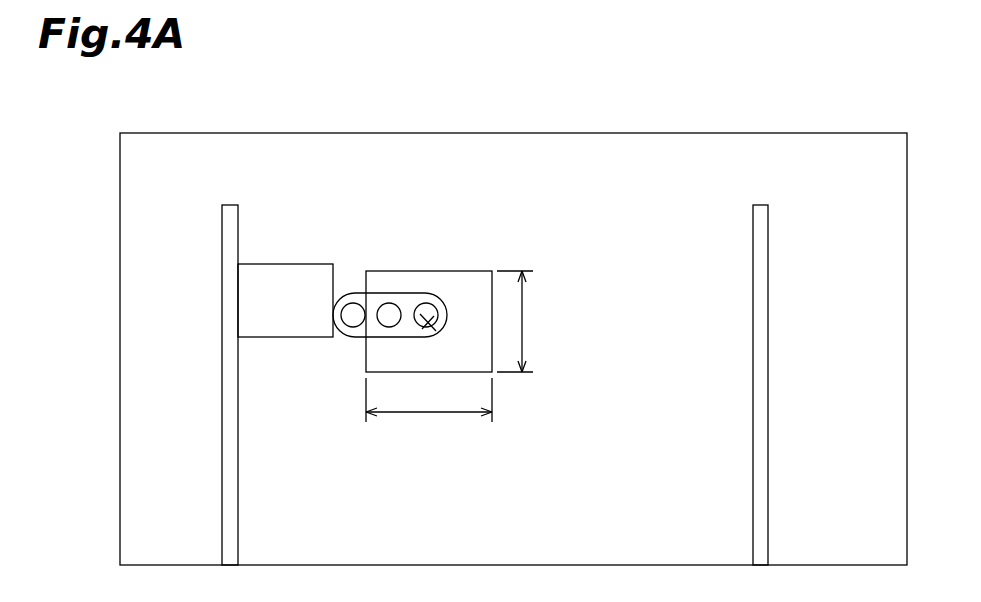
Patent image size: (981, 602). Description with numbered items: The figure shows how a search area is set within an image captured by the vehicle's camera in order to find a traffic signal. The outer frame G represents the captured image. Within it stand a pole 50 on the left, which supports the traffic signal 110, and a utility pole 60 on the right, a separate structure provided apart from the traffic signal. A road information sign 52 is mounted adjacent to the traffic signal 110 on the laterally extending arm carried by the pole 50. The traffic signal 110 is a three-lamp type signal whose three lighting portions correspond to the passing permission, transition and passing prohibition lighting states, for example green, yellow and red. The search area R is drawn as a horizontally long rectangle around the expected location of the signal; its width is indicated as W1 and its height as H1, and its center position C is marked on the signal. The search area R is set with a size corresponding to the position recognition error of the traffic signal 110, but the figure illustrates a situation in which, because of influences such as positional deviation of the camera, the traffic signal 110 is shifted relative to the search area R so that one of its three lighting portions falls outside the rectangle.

The region G is at (755, 133).
The pole 50 is at (222, 228).
The utility pole 60 is at (753, 241).
The road information sign 52 is at (280, 264).
The search area R is at (388, 271).
The traffic signal 110 is at (425, 293).
The center position C is at (431, 337).
The height of the search area H1 is at (526, 321).
The width of the search area W1 is at (429, 410).